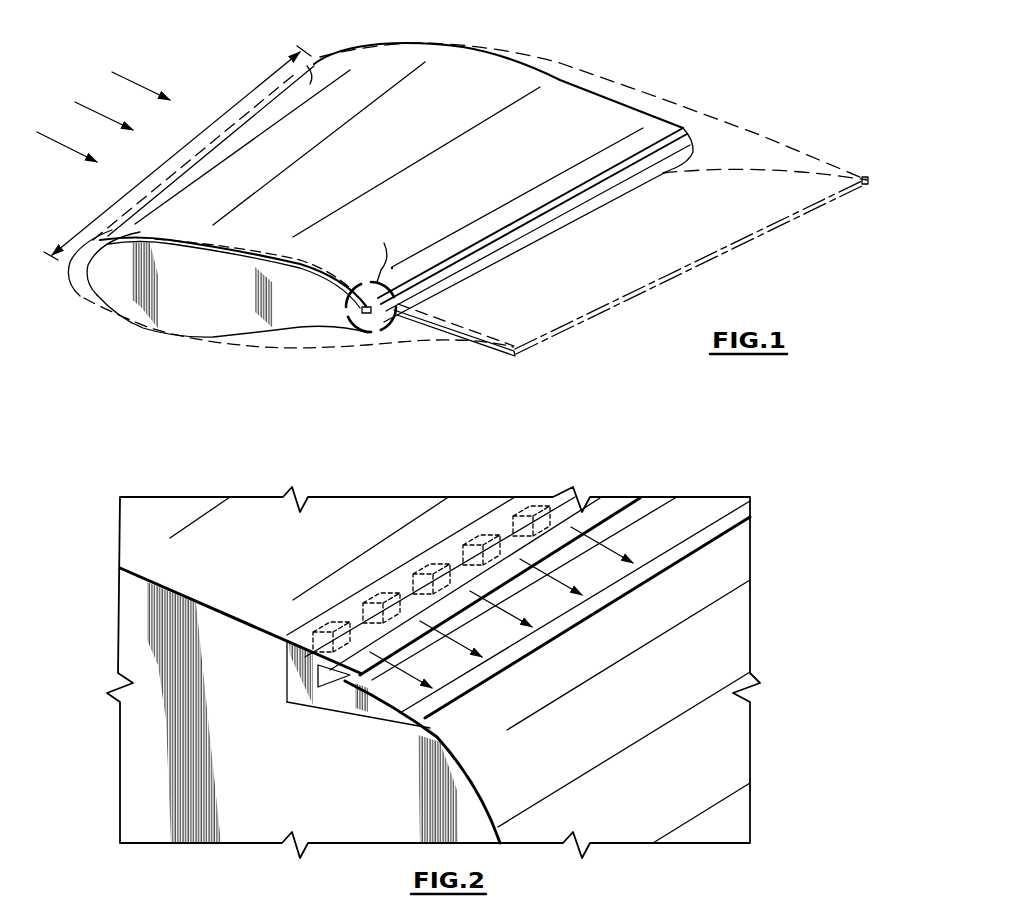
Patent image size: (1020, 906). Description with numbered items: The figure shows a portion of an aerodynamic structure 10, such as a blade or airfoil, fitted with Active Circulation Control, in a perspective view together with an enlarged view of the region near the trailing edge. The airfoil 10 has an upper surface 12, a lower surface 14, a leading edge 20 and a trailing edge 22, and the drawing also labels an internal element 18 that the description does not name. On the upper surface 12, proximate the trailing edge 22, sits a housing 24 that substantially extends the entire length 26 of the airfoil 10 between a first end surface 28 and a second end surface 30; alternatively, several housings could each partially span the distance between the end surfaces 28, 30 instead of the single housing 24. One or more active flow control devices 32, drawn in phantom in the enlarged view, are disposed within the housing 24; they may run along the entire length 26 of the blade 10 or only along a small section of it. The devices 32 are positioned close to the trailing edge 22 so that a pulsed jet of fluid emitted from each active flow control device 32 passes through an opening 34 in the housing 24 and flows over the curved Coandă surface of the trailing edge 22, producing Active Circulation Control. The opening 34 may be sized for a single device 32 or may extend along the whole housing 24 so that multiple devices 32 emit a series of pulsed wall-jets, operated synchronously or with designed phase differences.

In FIG. 1, the aerodynamic structure 10 is at (193, 114).
In FIG. 1, the upper surface 12 is at (447, 93).
In FIG. 2, the upper surface 12 is at (267, 550).
In FIG. 1, the lower surface 14 is at (233, 334).
In FIG. 1, the forward spar 18 is at (170, 300).
In FIG. 1, the leading edge 20 is at (90, 290).
In FIG. 1, the trailing edge 22 is at (388, 317).
In FIG. 2, the housing 24 is at (595, 507).
In FIG. 1, the length 26 is at (177, 153).
In FIG. 1, the first end surface 28 is at (186, 318).
In FIG. 1, the second end surface 30 is at (543, 72).
In FIG. 2, the active flow control devices 32 is at (474, 530).
In FIG. 1, the opening 34 is at (678, 127).
In FIG. 2, the opening 34 is at (334, 685).